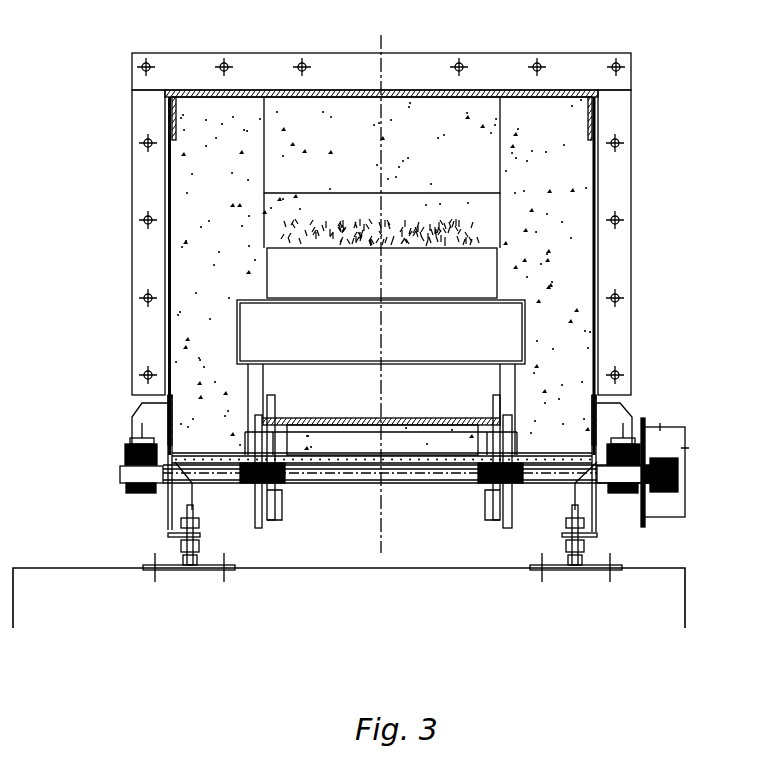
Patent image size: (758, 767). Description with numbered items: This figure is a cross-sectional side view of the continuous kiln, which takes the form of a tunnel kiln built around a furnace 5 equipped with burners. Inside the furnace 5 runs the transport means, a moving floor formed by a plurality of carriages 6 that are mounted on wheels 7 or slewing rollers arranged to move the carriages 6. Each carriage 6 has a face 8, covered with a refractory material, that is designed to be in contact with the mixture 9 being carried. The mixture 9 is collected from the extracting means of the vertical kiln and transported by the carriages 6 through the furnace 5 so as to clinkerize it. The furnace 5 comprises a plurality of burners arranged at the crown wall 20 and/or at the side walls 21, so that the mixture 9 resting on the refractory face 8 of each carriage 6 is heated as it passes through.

The furnace 5 is at (487, 212).
The carriage 6 is at (505, 338).
The wheel 7 is at (273, 520).
The face 8 is at (291, 245).
The mixture 9 is at (340, 232).
The crown wall 20 is at (404, 192).
The side walls 21 is at (503, 233).